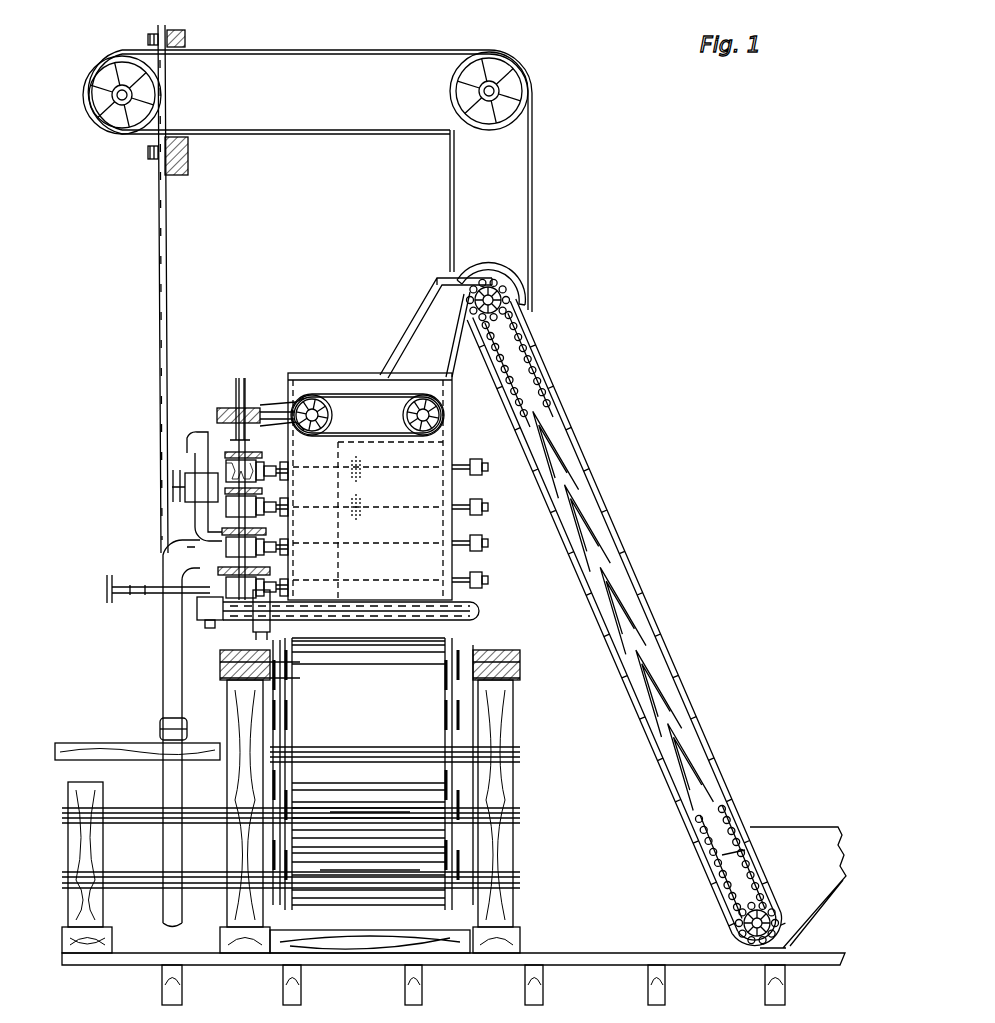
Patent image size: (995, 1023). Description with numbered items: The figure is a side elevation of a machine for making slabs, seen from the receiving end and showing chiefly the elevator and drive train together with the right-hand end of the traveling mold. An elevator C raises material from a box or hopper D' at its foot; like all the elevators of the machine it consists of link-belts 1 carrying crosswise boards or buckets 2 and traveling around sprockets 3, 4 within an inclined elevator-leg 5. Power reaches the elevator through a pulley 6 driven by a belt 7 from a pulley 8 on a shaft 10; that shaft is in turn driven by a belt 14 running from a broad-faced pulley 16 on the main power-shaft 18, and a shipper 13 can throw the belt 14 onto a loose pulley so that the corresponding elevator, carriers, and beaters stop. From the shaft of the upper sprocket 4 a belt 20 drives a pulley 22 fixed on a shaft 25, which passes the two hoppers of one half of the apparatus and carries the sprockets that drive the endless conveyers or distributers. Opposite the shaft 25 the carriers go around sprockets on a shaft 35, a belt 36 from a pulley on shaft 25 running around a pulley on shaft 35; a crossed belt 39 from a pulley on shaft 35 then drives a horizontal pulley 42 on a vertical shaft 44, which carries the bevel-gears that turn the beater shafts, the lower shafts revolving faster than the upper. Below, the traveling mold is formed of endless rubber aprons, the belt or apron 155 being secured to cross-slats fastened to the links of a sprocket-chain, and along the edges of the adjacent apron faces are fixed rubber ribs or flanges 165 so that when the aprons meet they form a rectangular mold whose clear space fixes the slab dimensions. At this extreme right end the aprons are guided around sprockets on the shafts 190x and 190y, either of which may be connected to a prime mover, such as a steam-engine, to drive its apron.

The link-belts 1 is at (713, 905).
The boards or buckets 2 is at (712, 882).
The sprocket 3 is at (772, 919).
The sprocket 4 is at (512, 368).
The inclined elevator-leg 5 is at (622, 522).
The pulley 6 is at (497, 276).
The belt 7 is at (529, 234).
The pulley 8 is at (466, 128).
The shaft 10 is at (528, 96).
The shipper 13 is at (170, 205).
The belt 14 is at (348, 52).
The pulley 16 is at (85, 84).
The main power-shaft 18 is at (88, 113).
The belt 20 is at (436, 328).
The pulley 22 is at (452, 430).
The shaft 25 is at (418, 417).
The shaft 35 is at (316, 396).
The belt 36 is at (385, 396).
The crossed belt 39 is at (268, 400).
The horizontal pulley 42 is at (222, 408).
The vertical shaft 44 is at (240, 405).
The belt or apron 155 is at (395, 795).
The ribs or flanges 165 is at (340, 630).
The shaft 190y is at (520, 813).
The shaft 190x is at (520, 878).
The elevator C is at (692, 579).
The box or hopper D' is at (798, 887).